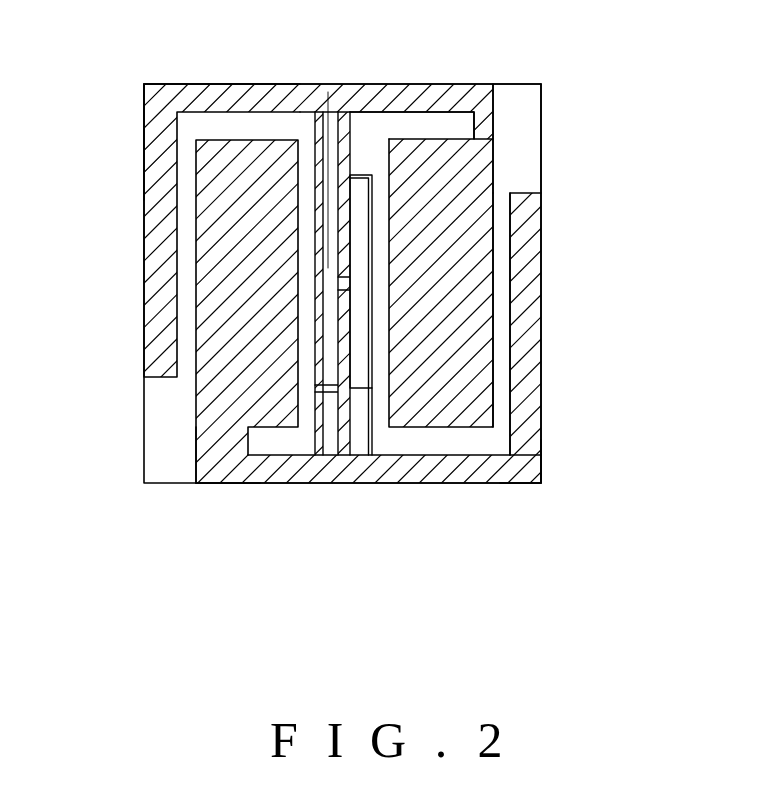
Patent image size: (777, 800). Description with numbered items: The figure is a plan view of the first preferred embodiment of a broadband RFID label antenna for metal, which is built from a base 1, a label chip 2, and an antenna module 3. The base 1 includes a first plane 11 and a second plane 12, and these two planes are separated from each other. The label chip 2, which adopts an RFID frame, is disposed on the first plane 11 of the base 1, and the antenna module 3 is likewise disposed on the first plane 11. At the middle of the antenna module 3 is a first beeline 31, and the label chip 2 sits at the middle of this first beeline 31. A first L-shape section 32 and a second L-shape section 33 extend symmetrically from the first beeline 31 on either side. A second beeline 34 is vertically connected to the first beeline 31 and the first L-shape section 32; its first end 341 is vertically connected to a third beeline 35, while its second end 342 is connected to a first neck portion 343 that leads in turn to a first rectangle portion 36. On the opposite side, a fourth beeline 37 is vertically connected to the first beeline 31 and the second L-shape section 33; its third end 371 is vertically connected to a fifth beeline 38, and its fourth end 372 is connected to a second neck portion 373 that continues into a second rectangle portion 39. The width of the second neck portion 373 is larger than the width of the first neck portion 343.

The base 1 is at (650, 227).
The first plane 11 is at (525, 152).
The second plane 12 is at (498, 213).
The label chip 2 is at (343, 277).
The antenna module 3 is at (245, 626).
The first beeline 31 is at (342, 362).
The first L-shape section 32 is at (327, 387).
The second L-shape section 33 is at (368, 287).
The second beeline 34 is at (323, 395).
The first end 341 is at (160, 95).
The second end 342 is at (485, 100).
The first neck portion 343 is at (483, 122).
The third beeline 35 is at (160, 167).
The first rectangle portion 36 is at (447, 203).
The fourth beeline 37 is at (344, 473).
The third end 371 is at (536, 484).
The fourth end 372 is at (207, 472).
The second neck portion 373 is at (200, 442).
The fifth beeline 38 is at (527, 360).
The second rectangle portion 39 is at (213, 372).